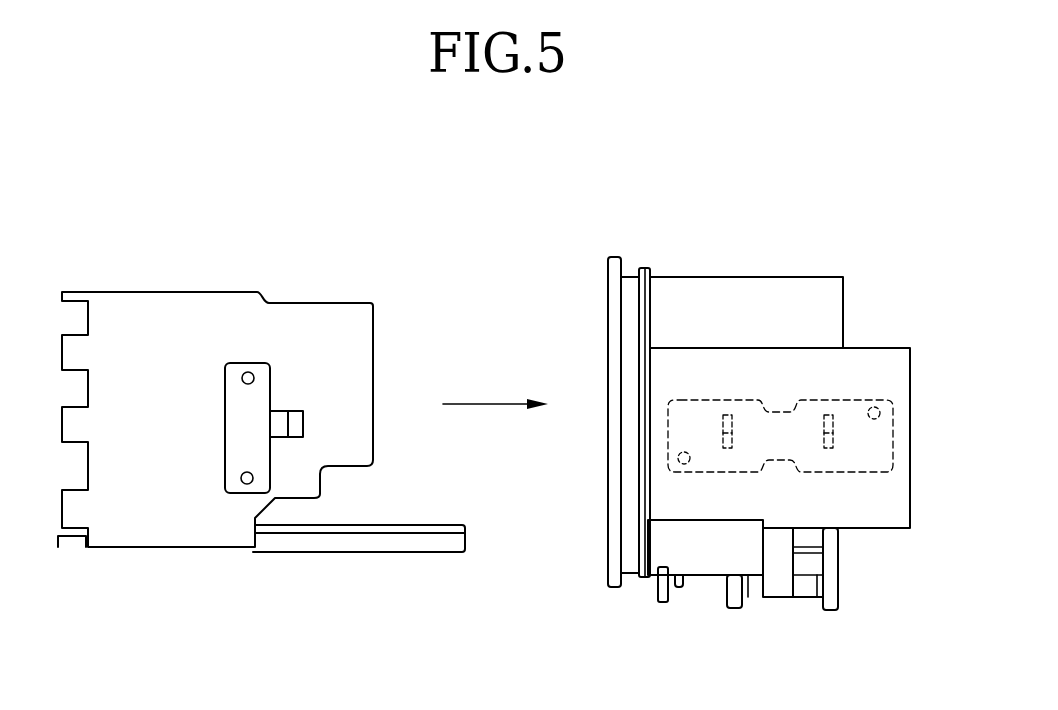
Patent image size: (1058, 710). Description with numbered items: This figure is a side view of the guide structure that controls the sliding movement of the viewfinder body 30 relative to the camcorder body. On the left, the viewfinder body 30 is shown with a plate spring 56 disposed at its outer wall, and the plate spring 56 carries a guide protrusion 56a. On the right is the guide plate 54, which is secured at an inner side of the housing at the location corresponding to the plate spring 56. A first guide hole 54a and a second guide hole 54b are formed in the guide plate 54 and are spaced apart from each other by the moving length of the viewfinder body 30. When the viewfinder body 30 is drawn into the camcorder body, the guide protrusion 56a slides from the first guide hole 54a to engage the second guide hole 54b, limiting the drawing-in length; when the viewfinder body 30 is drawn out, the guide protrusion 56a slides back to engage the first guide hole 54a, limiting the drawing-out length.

The viewfinder body 30 is at (157, 311).
The plate spring 56 is at (231, 461).
The guide protrusion 56a is at (292, 411).
The guide plate 54 is at (865, 462).
The first guide hole 54a is at (727, 425).
The second guide hole 54b is at (829, 425).